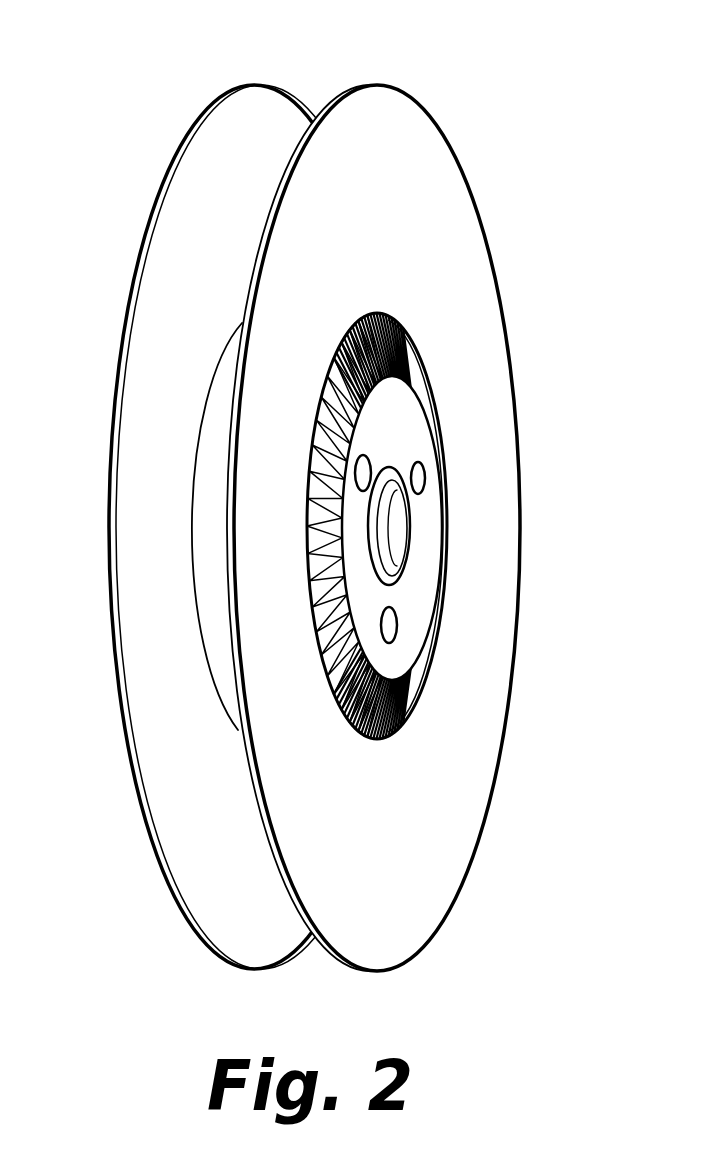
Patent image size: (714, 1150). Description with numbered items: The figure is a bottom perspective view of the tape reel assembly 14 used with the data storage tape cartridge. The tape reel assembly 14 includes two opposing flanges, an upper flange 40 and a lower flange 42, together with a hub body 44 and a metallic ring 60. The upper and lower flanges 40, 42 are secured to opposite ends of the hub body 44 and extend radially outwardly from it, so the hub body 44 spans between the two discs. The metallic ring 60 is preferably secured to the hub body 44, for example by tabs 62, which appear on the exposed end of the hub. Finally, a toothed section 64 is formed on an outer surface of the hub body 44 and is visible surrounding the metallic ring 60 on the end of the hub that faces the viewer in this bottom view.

The tape reel assembly 14 is at (316, 487).
The upper flange 40 is at (262, 119).
The lower flange 42 is at (466, 256).
The hub body 44 is at (203, 553).
The metallic ring 60 is at (415, 588).
The tabs 62 is at (423, 480).
The toothed section 64 is at (400, 362).